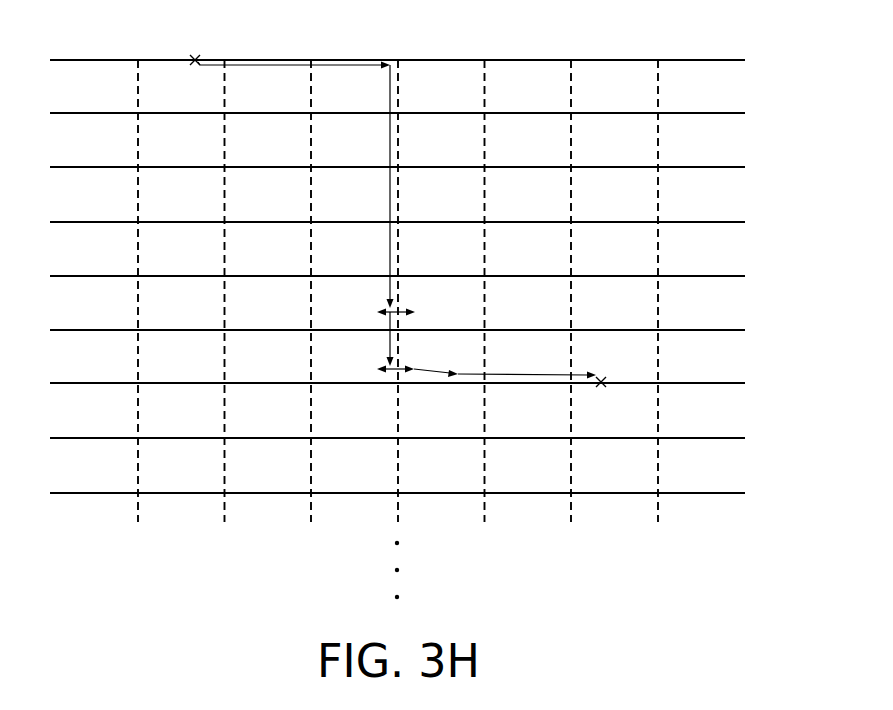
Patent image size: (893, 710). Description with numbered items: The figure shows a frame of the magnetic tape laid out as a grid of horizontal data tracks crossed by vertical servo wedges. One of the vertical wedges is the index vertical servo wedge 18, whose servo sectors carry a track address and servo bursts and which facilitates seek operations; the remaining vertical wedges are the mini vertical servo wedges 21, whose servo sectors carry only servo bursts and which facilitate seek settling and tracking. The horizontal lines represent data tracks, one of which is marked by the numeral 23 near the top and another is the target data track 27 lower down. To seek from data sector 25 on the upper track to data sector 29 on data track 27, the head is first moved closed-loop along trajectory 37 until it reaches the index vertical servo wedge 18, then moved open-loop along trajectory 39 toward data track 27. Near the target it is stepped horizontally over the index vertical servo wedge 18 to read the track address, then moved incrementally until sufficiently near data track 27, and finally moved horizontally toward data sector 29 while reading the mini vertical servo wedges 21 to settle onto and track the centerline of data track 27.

The index vertical servo wedge 18 is at (398, 136).
The mini vertical servo wedges 21 is at (138, 137).
The top row line 23 is at (703, 60).
The data sector 25 is at (207, 49).
The data track 27 is at (708, 383).
The data sector 29 is at (611, 394).
The trajectory 37 is at (258, 65).
The trajectory 39 is at (390, 187).